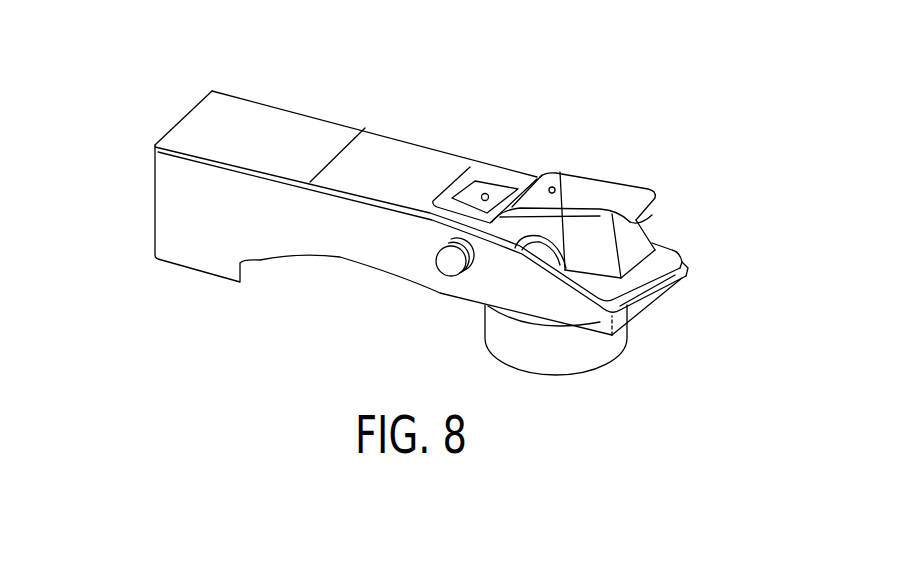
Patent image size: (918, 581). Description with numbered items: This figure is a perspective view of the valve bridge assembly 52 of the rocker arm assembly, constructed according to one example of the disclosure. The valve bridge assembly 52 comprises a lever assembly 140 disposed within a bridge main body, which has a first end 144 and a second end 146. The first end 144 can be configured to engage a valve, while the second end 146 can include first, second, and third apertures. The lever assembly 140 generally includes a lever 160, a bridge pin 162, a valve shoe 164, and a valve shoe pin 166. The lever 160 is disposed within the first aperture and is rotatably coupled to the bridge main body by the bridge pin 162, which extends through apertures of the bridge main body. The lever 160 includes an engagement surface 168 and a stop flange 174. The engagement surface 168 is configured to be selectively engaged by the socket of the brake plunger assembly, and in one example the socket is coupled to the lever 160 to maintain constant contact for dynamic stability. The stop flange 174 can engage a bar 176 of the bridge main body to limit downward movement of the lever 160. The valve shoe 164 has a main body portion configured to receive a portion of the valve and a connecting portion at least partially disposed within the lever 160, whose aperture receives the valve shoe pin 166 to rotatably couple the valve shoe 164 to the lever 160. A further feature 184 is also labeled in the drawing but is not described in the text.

The valve bridge assembly 52 is at (679, 81).
The lever assembly 140 is at (591, 145).
The first end 144 is at (135, 170).
The second end 146 is at (690, 228).
The lever 160 is at (605, 190).
The bridge pin 162 is at (452, 268).
The valve shoe 164 is at (603, 355).
The valve shoe pin 166 is at (542, 240).
The engagement surface 168 is at (640, 185).
The stop flange 174 is at (662, 200).
The bar 176 is at (672, 285).
The platform 184 is at (497, 185).